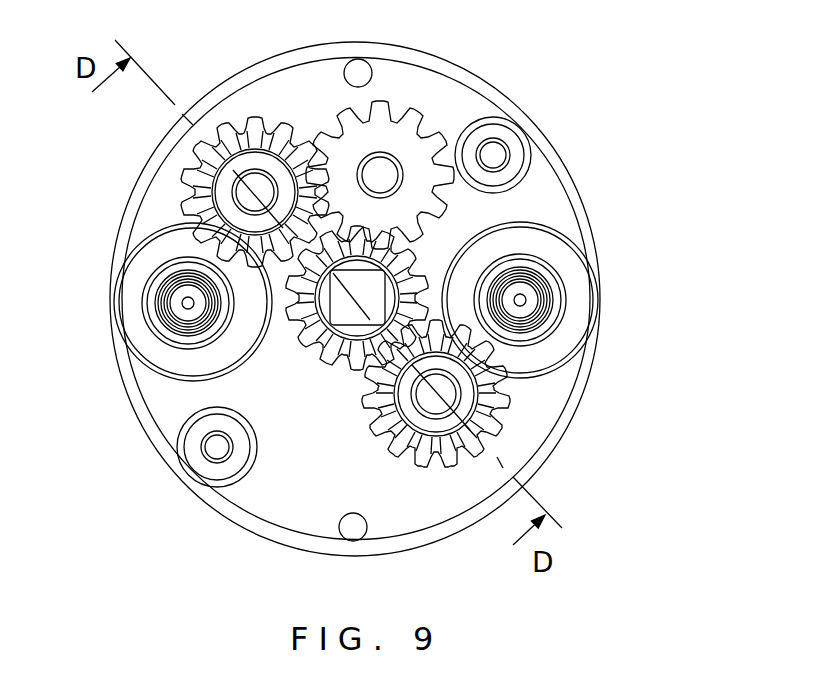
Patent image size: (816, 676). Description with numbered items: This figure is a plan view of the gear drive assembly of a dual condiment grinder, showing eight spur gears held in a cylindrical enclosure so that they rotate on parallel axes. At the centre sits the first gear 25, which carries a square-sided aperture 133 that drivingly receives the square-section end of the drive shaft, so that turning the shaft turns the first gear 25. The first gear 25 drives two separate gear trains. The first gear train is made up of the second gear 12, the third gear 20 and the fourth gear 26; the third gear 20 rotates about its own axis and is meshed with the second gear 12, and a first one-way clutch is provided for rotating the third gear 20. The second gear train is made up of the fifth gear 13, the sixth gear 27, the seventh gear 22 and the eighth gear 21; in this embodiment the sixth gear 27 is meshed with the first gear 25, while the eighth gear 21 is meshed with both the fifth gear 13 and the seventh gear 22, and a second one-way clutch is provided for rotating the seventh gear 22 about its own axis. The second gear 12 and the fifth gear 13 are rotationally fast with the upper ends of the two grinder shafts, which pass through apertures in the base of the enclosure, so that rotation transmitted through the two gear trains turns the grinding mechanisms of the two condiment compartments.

The second spur gear 12 is at (572, 272).
The fifth spur gear 13 is at (135, 318).
The third spur gear 20 is at (513, 393).
The eighth spur gear 21 is at (410, 127).
The seventh spur gear 22 is at (246, 137).
The first spur gear 25 is at (310, 333).
The fourth spur gear 26 is at (510, 422).
The sixth spur gear 27 is at (270, 100).
The square-sided aperture 133 is at (350, 318).